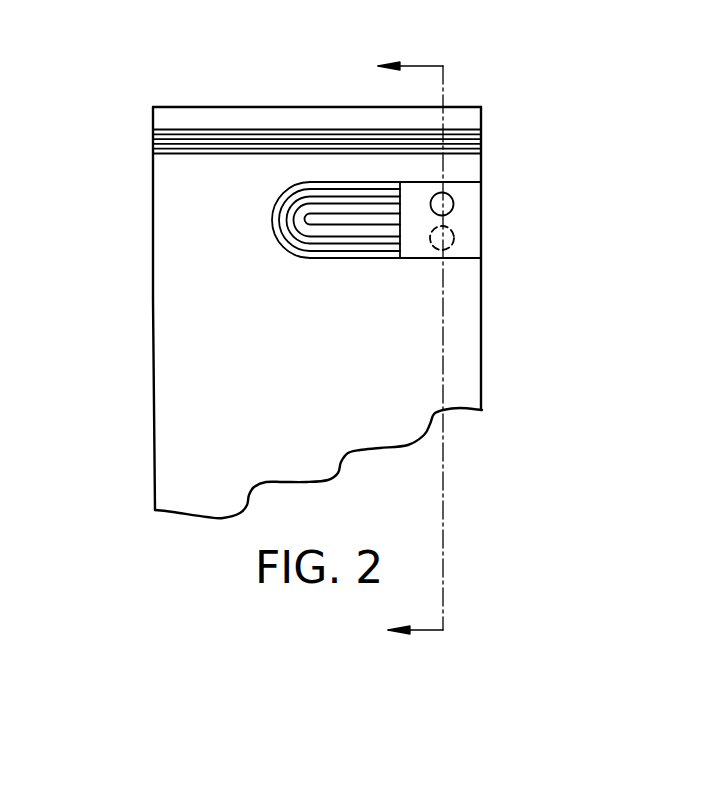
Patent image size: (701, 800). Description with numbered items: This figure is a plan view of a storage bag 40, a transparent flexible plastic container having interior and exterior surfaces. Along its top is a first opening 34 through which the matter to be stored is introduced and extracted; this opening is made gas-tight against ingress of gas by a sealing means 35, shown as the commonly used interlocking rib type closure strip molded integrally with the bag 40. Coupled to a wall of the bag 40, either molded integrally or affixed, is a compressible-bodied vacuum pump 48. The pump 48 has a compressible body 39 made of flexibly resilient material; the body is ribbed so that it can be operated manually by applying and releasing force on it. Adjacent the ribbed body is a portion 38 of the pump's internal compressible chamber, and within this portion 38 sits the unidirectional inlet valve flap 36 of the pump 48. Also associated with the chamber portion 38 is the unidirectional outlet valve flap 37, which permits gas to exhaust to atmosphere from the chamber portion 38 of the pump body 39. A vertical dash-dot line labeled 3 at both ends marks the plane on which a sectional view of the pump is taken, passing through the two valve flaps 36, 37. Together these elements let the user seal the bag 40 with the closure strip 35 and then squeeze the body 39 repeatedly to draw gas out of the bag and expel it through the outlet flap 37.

The section line 3— 3 is at (423, 346).
The first opening 34 is at (305, 107).
The sealing means 35 is at (224, 148).
The unidirectional inlet valve flap 36 is at (453, 238).
The unidirectional outlet valve flap 37 is at (453, 203).
The portion of the internal compressible chamber 38 is at (417, 247).
The compressible body 39 is at (310, 258).
The storage bag 40 is at (163, 187).
The compressible-bodied vacuum pump 48 is at (273, 228).